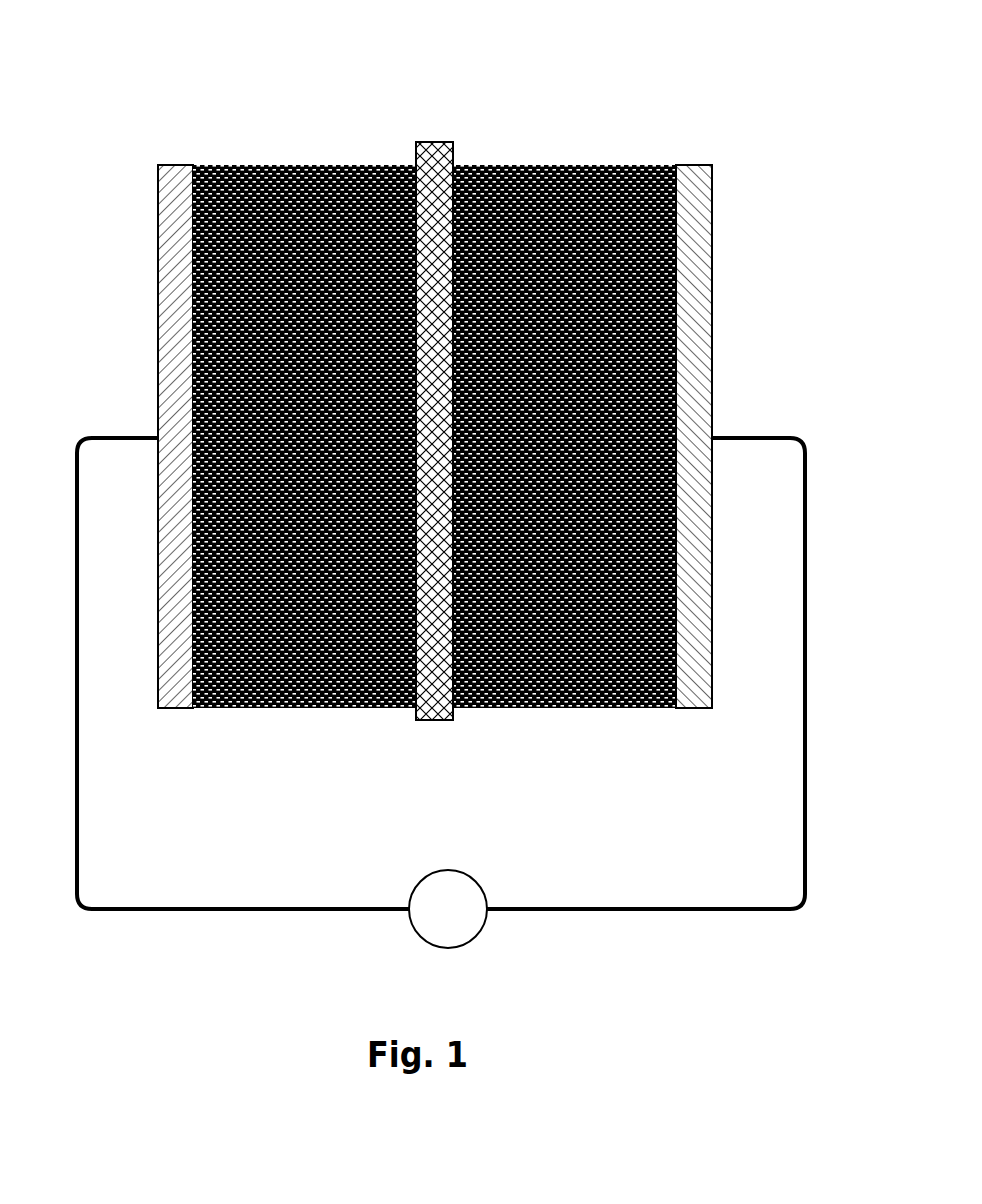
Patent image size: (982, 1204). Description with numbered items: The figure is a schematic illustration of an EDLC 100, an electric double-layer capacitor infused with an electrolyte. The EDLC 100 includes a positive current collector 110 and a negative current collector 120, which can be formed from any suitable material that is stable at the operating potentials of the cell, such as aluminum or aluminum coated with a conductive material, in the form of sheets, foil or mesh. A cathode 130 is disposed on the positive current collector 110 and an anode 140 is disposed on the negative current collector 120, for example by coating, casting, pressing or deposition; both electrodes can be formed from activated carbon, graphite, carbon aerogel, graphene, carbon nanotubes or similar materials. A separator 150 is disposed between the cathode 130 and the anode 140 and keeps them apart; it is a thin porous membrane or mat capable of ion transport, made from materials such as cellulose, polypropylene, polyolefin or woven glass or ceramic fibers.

The EDLC 100 is at (724, 57).
The positive current collector 110 is at (693, 165).
The negative current collector 120 is at (177, 163).
The cathode 130 is at (520, 165).
The anode 140 is at (267, 165).
The separator 150 is at (435, 142).